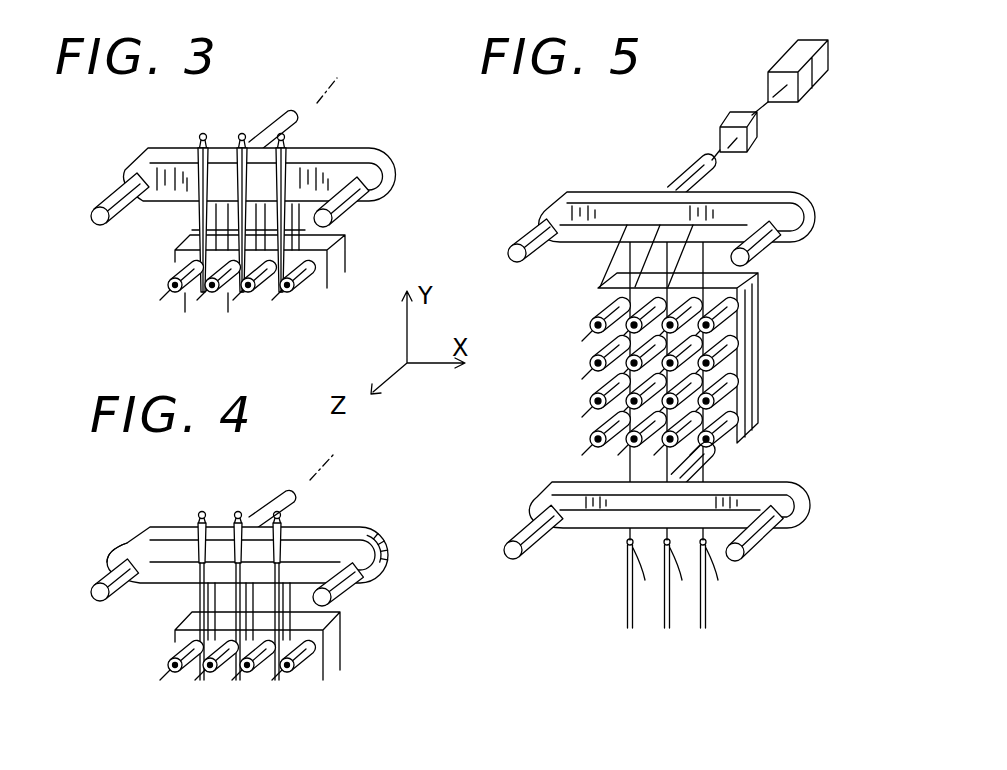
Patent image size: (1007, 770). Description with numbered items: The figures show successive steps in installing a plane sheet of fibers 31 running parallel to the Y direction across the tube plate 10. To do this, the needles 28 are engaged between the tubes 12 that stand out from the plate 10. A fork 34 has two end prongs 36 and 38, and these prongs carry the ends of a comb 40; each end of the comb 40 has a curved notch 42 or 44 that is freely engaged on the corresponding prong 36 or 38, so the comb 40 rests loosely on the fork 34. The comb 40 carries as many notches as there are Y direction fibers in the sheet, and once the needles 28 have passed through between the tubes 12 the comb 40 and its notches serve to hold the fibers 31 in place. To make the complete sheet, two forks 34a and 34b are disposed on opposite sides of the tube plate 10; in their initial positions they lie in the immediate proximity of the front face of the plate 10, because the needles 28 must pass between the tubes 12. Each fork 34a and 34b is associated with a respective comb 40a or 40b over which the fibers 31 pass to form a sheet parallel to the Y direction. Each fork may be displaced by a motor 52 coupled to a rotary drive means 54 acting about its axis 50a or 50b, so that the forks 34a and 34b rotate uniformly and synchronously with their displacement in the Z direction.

In FIG. 3, the tube plate 10 is at (342, 274).
In FIG. 4, the tube plate 10 is at (330, 647).
In FIG. 5, the tube plate 10 is at (752, 350).
In FIG. 3, the tubes 12 is at (252, 300).
In FIG. 4, the tubes 12 is at (303, 662).
In FIG. 5, the tubes 12 is at (730, 317).
In FIG. 3, the needles 28 is at (302, 283).
In FIG. 4, the needles 28 is at (208, 532).
In FIG. 5, the needles 28 is at (630, 590).
In FIG. 3, the sheet of fibers 31 is at (190, 219).
In FIG. 5, the sheet of fibers 31 is at (627, 467).
In FIG. 3, the fork 34 is at (348, 152).
In FIG. 4, the fork 34 is at (267, 549).
In FIG. 5, the first fork 34a is at (713, 193).
In FIG. 5, the second fork 34b is at (695, 527).
In FIG. 3, the end prong 36 is at (340, 200).
In FIG. 4, the end prong 36 is at (352, 585).
In FIG. 3, the end prong 38 is at (120, 195).
In FIG. 4, the end prong 38 is at (96, 578).
In FIG. 4, the comb 40 is at (305, 572).
In FIG. 5, the first comb 40a is at (592, 233).
In FIG. 5, the second comb 40b is at (770, 535).
In FIG. 4, the curved notch 42 is at (372, 541).
In FIG. 4, the curved notch 44 is at (117, 552).
In FIG. 5, the rotation axis 50a is at (710, 178).
In FIG. 5, the rotation axis 50b is at (708, 468).
In FIG. 5, the motor 52 is at (805, 58).
In FIG. 5, the rotary drive means 54 is at (752, 133).